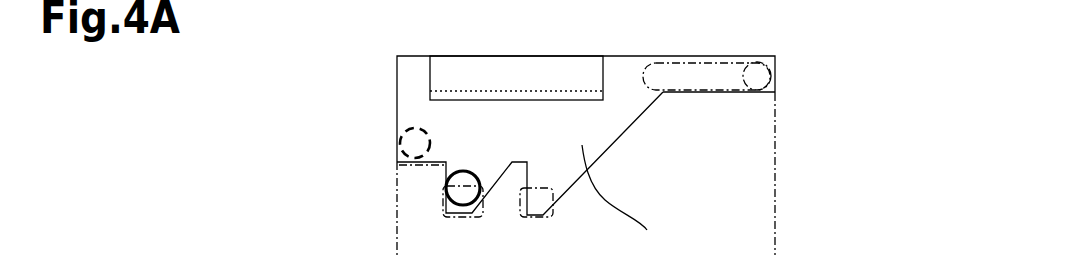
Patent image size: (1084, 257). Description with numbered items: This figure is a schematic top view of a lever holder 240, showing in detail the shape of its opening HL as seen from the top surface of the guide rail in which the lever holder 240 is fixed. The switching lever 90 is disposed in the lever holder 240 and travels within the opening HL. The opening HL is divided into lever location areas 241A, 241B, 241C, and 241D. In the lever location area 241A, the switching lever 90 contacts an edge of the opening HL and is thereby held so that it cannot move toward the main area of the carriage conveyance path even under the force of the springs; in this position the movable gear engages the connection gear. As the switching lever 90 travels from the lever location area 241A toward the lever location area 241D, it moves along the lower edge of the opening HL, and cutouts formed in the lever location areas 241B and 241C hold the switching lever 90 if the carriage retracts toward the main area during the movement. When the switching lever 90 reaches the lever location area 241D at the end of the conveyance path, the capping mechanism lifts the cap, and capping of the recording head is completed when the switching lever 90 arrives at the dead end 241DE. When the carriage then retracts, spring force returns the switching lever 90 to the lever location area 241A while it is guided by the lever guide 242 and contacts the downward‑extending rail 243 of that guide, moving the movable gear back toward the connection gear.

The lever holder 240 is at (611, 162).
The lever location area 241A is at (420, 168).
The lever location area 241B is at (474, 208).
The lever location area 241C is at (550, 217).
The lever location area 241D is at (683, 92).
The dead end 241DE is at (740, 72).
The lever guide 242 is at (430, 64).
The rail 243 is at (488, 91).
The switching lever 90 is at (473, 174).
The opening HL is at (624, 201).